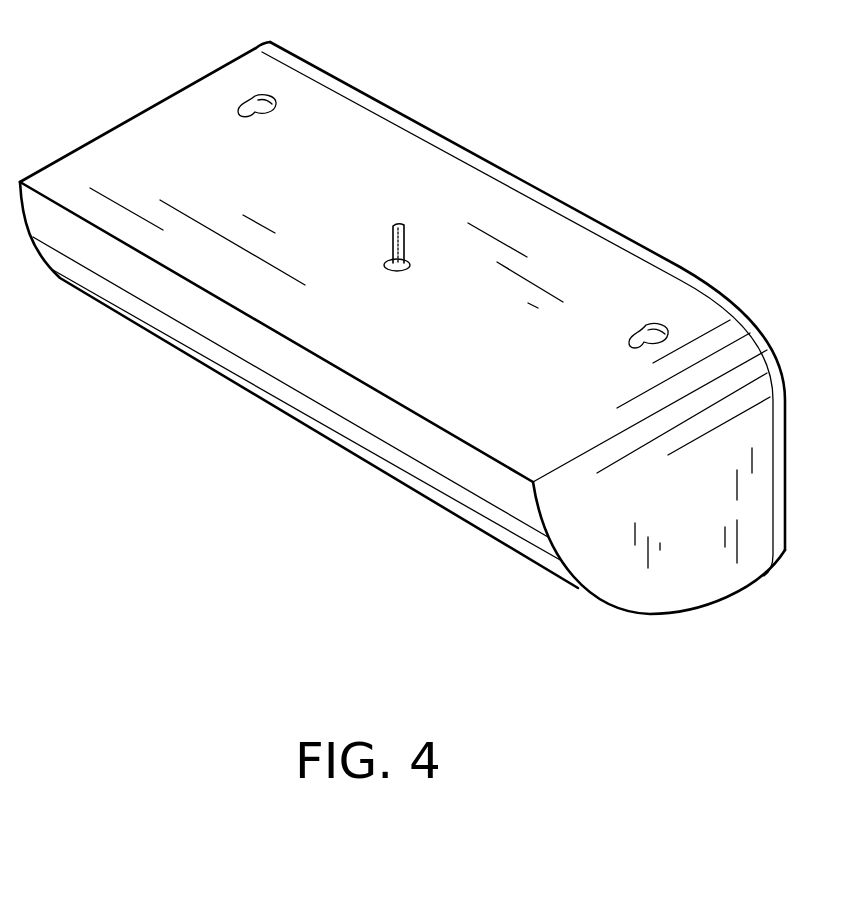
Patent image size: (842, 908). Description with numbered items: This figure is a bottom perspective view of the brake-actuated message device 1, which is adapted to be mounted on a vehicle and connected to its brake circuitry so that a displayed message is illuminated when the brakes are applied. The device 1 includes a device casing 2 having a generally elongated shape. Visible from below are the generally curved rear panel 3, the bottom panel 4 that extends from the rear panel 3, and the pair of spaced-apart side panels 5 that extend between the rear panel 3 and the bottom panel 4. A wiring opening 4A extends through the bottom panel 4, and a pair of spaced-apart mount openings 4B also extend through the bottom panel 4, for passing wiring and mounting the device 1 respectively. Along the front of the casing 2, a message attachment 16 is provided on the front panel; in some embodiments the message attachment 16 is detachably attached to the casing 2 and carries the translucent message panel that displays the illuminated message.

The brake-actuated message device 1 is at (410, 361).
The device casing 2 is at (641, 613).
The rear panel 3 is at (393, 430).
The bottom panel 4 is at (409, 248).
The wiring opening 4A is at (407, 260).
The mount openings 4B is at (258, 96).
The side panels 5 is at (693, 580).
The message attachment 16 is at (627, 240).